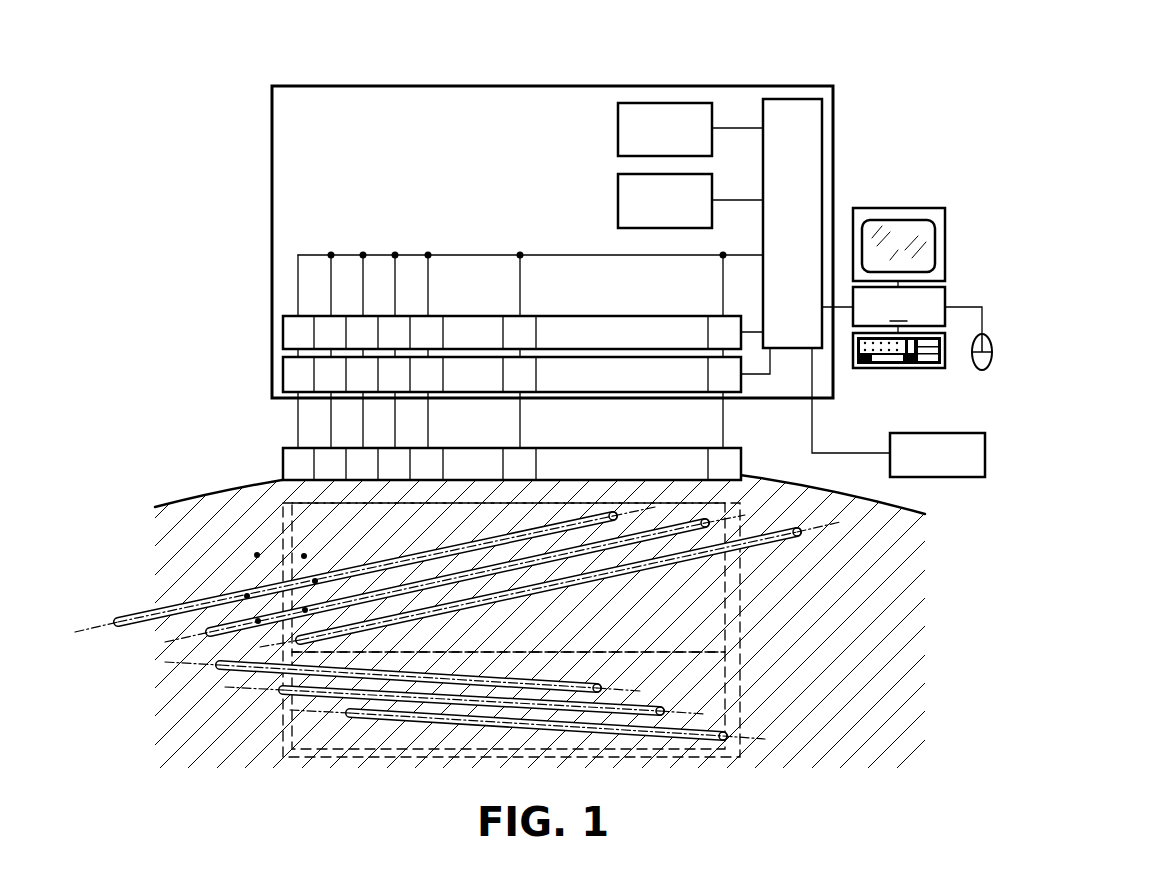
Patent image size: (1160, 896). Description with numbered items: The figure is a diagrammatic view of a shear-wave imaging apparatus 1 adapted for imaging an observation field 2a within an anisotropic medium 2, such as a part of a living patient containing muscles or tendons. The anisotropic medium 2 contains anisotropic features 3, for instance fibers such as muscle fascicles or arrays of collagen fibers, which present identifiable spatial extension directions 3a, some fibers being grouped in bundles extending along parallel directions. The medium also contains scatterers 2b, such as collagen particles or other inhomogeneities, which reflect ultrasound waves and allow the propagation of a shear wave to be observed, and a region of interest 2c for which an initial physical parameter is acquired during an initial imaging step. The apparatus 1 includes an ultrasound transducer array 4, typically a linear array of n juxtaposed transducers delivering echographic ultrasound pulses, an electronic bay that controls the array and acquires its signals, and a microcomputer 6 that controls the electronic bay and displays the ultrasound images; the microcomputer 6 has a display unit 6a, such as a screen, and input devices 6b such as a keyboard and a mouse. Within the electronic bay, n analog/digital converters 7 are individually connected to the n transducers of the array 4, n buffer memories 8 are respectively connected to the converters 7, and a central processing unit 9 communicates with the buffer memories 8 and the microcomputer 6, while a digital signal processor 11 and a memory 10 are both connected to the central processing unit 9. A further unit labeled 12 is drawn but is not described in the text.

The apparatus 1 is at (872, 127).
The anisotropic medium 2 is at (198, 486).
The observation field 2a is at (660, 768).
The scatterers 2b is at (258, 621).
The region of interest 2c is at (740, 612).
The anisotropic features 3 is at (445, 608).
The spatial extension directions 3a is at (640, 515).
The ultrasound transducer array 4 is at (272, 440).
The microcomputer 6 is at (917, 307).
The display unit 6a is at (927, 210).
The input devices 6b is at (976, 370).
The analog/digital converters 7 is at (300, 86).
The buffer memories 8 is at (322, 318).
The central processing unit 9 is at (800, 99).
The memory 10 is at (618, 197).
The digital signal processor 11 is at (618, 125).
The ECG device 12 is at (963, 477).